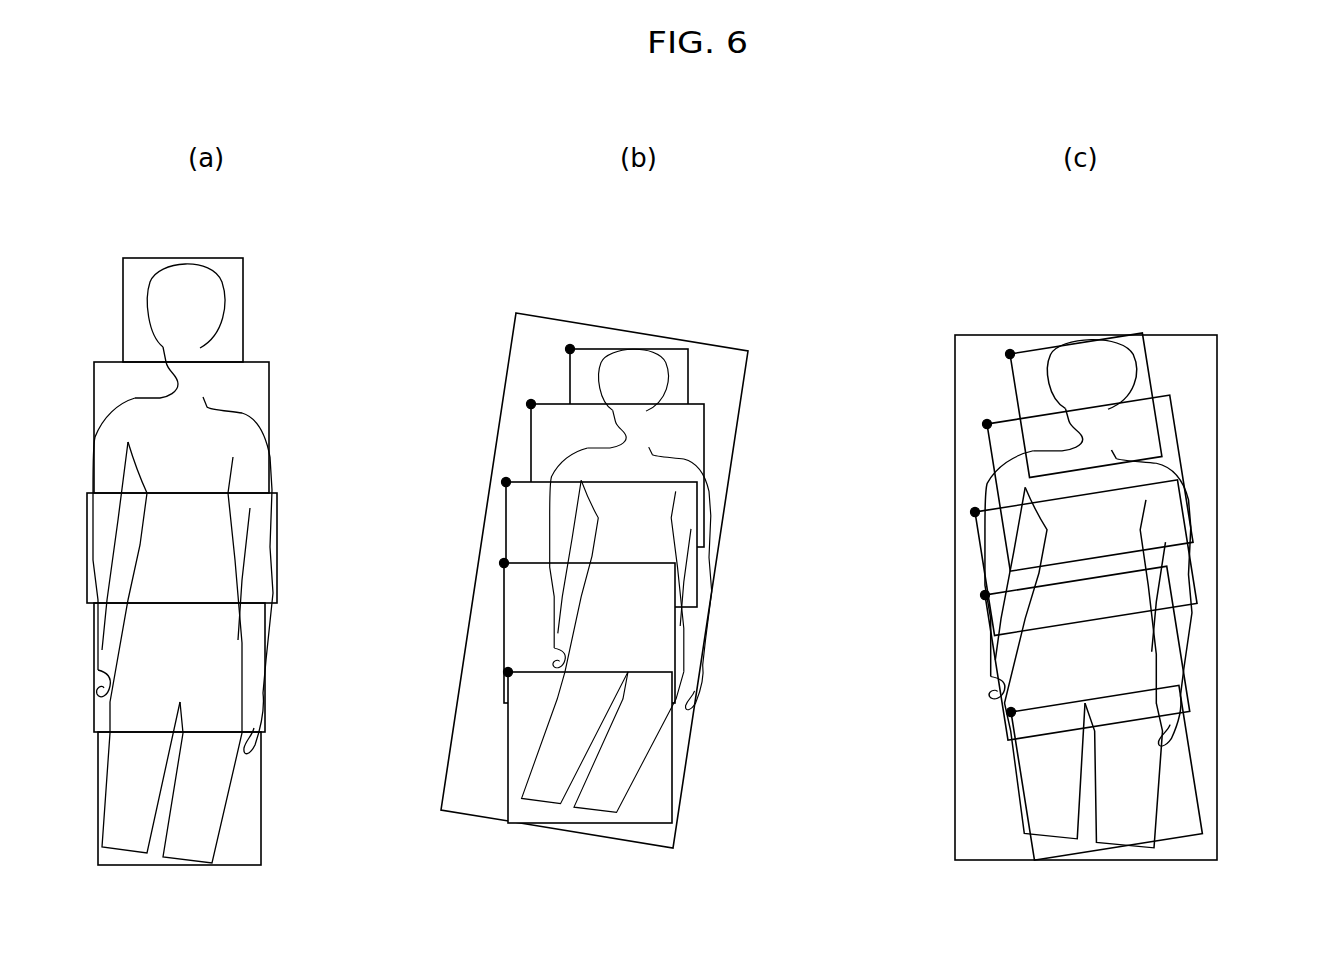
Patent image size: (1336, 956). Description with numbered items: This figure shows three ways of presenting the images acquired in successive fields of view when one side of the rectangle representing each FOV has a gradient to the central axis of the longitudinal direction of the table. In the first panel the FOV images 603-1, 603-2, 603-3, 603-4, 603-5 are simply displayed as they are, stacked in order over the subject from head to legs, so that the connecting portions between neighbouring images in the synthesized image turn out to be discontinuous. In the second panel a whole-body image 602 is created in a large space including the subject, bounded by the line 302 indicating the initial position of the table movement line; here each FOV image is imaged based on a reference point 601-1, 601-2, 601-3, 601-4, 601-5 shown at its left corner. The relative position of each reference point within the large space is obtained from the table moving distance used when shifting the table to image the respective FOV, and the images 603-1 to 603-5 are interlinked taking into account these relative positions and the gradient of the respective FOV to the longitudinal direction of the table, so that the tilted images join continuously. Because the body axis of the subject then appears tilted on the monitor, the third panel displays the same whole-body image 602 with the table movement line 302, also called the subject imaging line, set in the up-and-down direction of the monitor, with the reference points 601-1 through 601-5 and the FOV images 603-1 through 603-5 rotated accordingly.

The line indicating the initial position of the table movement line 302 is at (652, 308).
The whole-body image 602 is at (829, 552).
The reference point 601-1 is at (567, 349).
The reference point 601-2 is at (528, 405).
The reference point 601-3 is at (506, 482).
The reference point 601-4 is at (502, 564).
The reference point 601-5 is at (506, 672).
The FOV image 603-1 is at (205, 299).
The FOV image 603-2 is at (248, 438).
The FOV image 603-3 is at (242, 572).
The FOV image 603-4 is at (230, 665).
The FOV image 603-5 is at (227, 828).